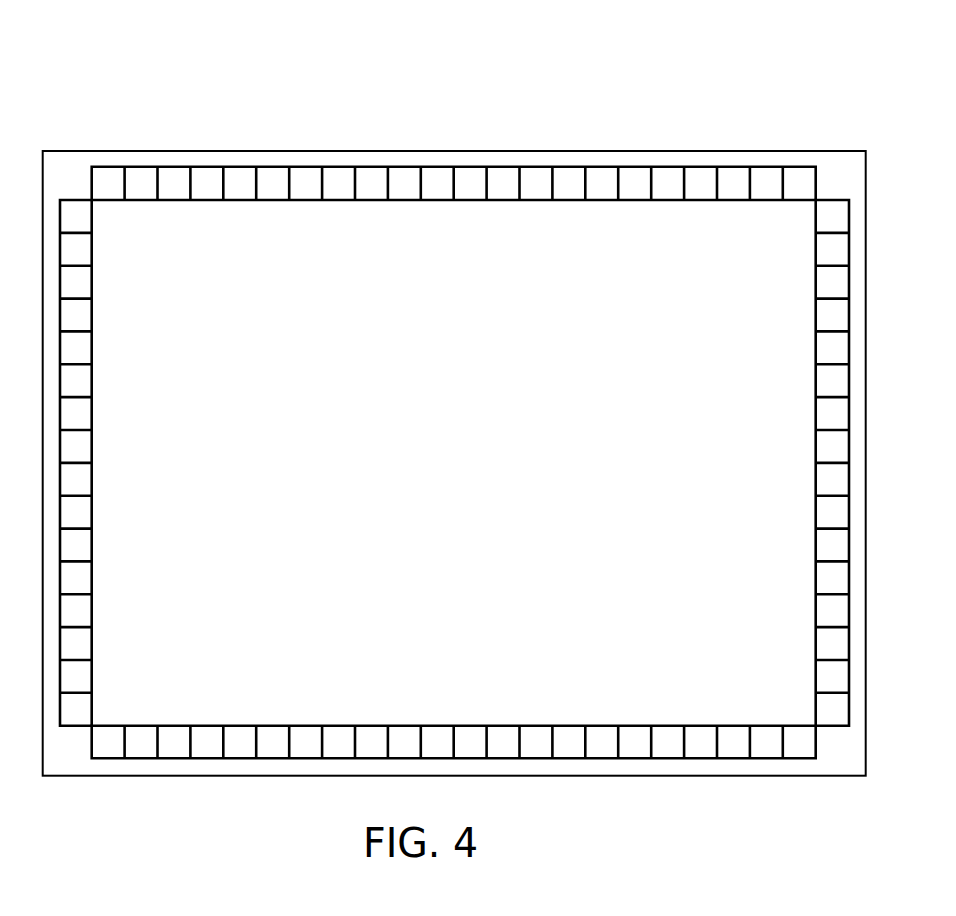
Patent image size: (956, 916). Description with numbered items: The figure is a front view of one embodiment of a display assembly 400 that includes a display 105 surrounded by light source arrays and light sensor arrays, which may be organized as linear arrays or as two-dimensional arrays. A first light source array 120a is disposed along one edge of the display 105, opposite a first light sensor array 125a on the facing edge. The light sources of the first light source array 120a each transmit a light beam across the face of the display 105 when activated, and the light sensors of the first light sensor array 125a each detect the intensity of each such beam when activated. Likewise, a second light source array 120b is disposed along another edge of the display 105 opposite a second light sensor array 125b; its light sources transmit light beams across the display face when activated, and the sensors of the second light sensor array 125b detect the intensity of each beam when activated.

The display assembly 400 is at (110, 63).
The display 105 is at (483, 478).
The first light source array 120a is at (92, 446).
The second light source array 120b is at (472, 200).
The first light sensor array 125a is at (816, 446).
The second light sensor array 125b is at (472, 726).